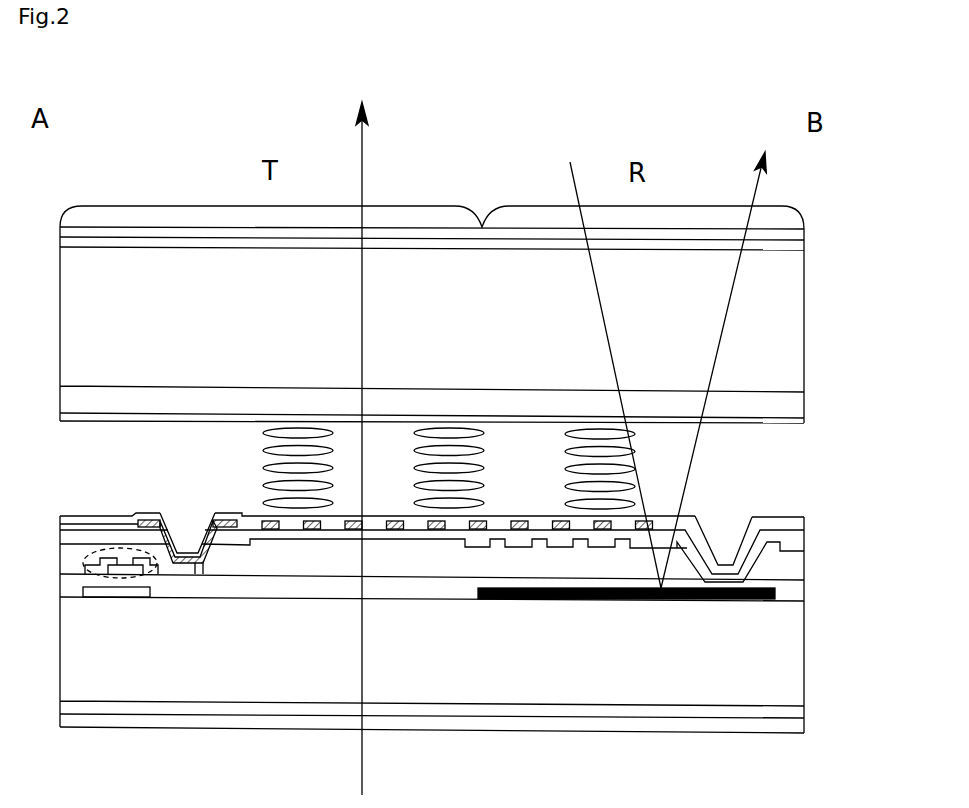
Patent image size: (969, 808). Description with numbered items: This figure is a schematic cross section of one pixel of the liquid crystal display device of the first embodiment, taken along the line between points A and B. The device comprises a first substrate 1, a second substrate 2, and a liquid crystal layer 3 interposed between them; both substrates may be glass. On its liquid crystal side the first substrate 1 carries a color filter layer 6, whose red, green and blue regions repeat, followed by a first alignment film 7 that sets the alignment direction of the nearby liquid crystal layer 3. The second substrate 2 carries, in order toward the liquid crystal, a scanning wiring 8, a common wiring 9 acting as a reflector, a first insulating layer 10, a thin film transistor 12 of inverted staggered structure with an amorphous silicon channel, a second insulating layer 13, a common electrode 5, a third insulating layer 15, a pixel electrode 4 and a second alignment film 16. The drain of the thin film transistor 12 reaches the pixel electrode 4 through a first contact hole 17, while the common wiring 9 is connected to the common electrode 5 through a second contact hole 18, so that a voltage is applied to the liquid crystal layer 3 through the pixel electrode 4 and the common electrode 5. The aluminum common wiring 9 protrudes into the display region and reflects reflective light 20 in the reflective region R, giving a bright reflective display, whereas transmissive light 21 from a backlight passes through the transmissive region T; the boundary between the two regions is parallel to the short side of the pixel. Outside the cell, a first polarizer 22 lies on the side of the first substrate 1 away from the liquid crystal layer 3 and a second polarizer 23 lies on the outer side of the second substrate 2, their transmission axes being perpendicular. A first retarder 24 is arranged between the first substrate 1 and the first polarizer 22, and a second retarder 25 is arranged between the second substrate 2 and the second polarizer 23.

The first substrate 1 is at (800, 320).
The second substrate 2 is at (800, 661).
The liquid crystal layer 3 is at (58, 422).
The pixel electrode 4 is at (193, 565).
The common electrode 5 is at (777, 546).
The color filter layer 6 is at (800, 405).
The first alignment film 7 is at (803, 424).
The scanning wiring 8 is at (97, 597).
The common wiring 9 is at (726, 600).
The first insulating layer 10 is at (800, 600).
The thin film transistor 12 is at (138, 580).
The second insulating layer 13 is at (800, 574).
The third insulating layer 15 is at (800, 537).
The second alignment film 16 is at (804, 519).
The first contact hole 17 is at (213, 501).
The second contact hole 18 is at (698, 501).
The reflective light 20 is at (768, 182).
The transmissive light 21 is at (363, 157).
The first polarizer 22 is at (803, 238).
The second polarizer 23 is at (800, 730).
The first retarder 24 is at (803, 250).
The second retarder 25 is at (800, 712).